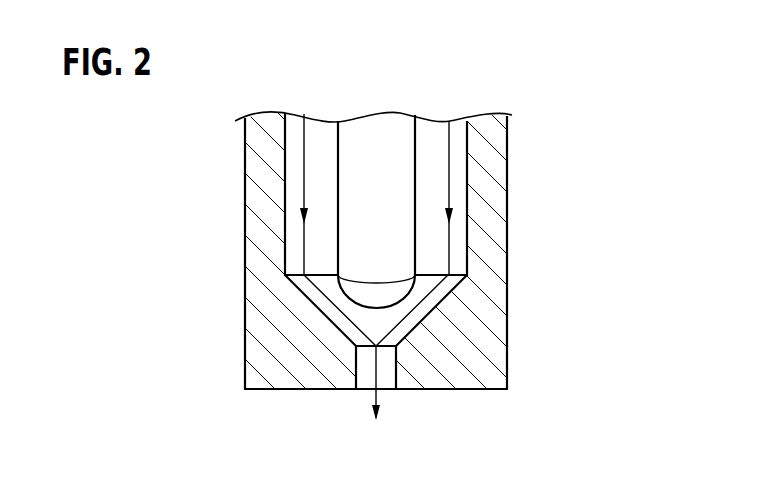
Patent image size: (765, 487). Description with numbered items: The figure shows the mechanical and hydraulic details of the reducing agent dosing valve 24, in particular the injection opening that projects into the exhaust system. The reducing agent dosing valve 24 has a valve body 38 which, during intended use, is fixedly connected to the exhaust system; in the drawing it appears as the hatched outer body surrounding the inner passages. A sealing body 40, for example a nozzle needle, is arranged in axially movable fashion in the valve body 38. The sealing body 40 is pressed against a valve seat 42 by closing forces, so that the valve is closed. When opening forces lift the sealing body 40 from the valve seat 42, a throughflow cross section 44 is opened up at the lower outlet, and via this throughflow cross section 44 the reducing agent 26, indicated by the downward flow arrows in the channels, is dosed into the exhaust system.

The reducing agent dosing valve 24 is at (196, 203).
The reducing agent 26 is at (306, 145).
The valve body 38 is at (245, 312).
The sealing body 40 is at (380, 140).
The valve seat 42 is at (331, 329).
The throughflow cross section 44 is at (363, 390).